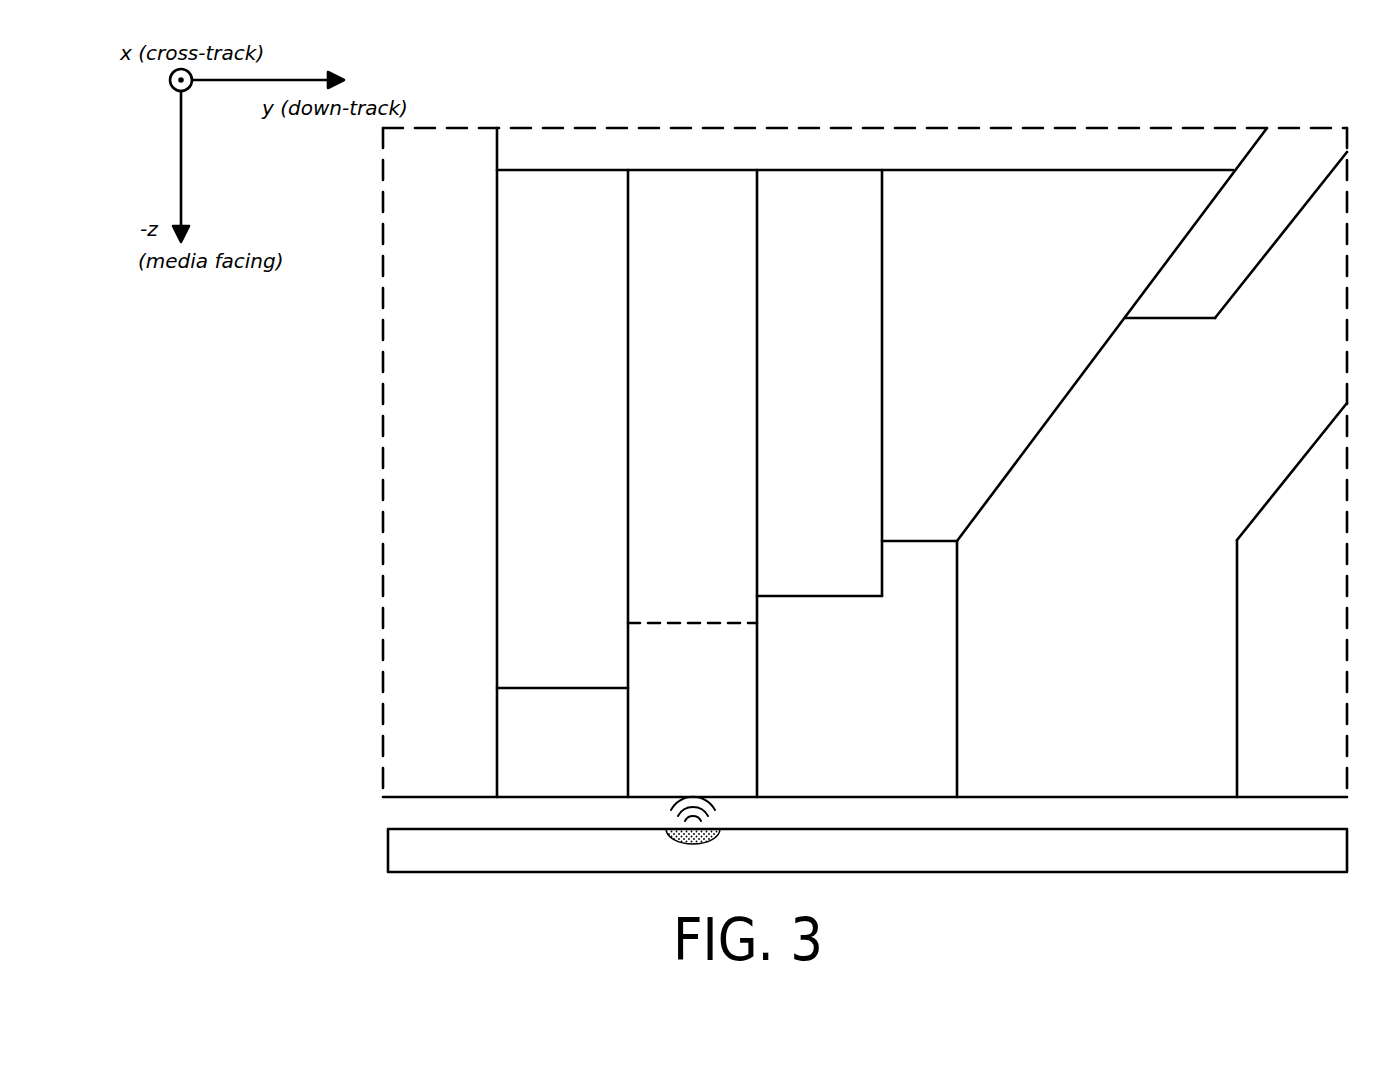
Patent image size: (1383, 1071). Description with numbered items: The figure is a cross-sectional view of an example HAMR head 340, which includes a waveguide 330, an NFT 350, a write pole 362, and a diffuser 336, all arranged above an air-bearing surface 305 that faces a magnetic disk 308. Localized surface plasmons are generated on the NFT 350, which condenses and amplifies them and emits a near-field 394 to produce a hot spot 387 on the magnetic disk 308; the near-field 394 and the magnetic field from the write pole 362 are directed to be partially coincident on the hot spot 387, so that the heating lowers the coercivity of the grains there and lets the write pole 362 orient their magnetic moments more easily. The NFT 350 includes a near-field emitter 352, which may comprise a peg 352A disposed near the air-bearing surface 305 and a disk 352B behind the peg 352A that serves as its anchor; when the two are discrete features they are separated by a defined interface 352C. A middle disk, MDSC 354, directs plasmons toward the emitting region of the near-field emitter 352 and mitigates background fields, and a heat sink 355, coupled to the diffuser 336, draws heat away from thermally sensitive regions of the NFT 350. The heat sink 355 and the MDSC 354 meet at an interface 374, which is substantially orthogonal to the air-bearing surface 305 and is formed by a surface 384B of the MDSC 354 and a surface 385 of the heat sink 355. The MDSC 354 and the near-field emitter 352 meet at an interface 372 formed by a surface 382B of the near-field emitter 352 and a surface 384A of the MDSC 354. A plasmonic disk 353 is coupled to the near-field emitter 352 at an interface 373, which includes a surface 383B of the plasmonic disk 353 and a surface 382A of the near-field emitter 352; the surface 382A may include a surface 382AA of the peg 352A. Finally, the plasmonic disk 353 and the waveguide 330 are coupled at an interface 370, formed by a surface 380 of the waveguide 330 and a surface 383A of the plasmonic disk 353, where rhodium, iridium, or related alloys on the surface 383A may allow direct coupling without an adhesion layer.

The air-bearing surface 305 is at (398, 797).
The magnetic disk 308 is at (400, 843).
The waveguide 330 is at (459, 584).
The diffuser 336 is at (1244, 261).
The HAMR head 340 is at (1196, 112).
The NFT 350 is at (790, 145).
The near-field emitter 352 is at (715, 413).
The peg 352A is at (733, 745).
The disk 352B is at (738, 270).
The interface 352C is at (686, 620).
The plasmonic disk 353 is at (582, 442).
The middle disk 354 is at (837, 399).
The heat sink 355 is at (1017, 343).
The write pole 362 is at (1230, 441).
The interface 370 is at (497, 180).
The interface 372 is at (757, 178).
The interface 373 is at (628, 178).
The interface 374 is at (882, 170).
The surface of waveguide 380 is at (493, 352).
The surface of near-field emitter 382A is at (631, 263).
The surface of peg 382AA is at (634, 648).
The surface of near-field emitter 382B is at (752, 528).
The surface of plasmonic disk 383A is at (499, 380).
The surface of plasmonic disk 383B is at (626, 295).
The surface of MDSC 384A is at (761, 507).
The surface of MDSC 384B is at (878, 423).
The surface of heat sink 385 is at (886, 458).
The hot spot 387 is at (712, 838).
The near-field 394 is at (665, 810).